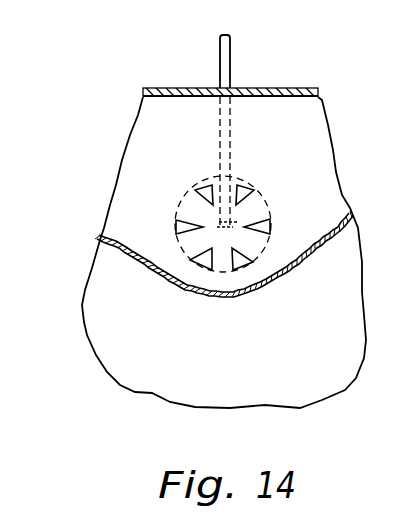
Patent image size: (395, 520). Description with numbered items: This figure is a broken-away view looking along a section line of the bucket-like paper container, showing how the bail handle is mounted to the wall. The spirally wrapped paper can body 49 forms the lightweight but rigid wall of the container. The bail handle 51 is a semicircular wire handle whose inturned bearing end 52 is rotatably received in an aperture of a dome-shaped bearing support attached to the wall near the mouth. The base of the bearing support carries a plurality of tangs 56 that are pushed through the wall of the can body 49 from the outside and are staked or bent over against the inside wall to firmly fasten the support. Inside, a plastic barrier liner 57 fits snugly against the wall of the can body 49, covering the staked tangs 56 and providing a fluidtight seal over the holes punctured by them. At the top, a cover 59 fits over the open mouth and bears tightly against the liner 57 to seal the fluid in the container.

The can body 49 is at (118, 197).
The bail handle 51 is at (221, 64).
The bearing ends 52 is at (270, 211).
The tangs 56 is at (205, 190).
The plastic barrier liner 57 is at (100, 279).
The cover 59 is at (284, 87).